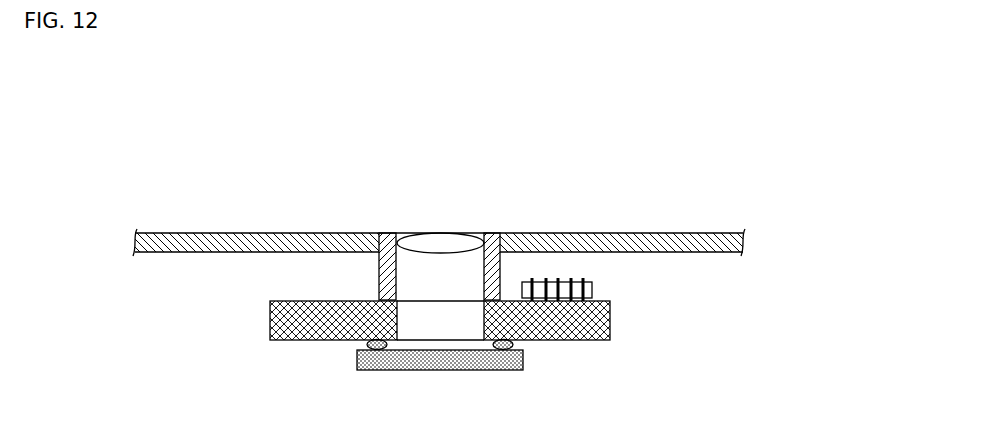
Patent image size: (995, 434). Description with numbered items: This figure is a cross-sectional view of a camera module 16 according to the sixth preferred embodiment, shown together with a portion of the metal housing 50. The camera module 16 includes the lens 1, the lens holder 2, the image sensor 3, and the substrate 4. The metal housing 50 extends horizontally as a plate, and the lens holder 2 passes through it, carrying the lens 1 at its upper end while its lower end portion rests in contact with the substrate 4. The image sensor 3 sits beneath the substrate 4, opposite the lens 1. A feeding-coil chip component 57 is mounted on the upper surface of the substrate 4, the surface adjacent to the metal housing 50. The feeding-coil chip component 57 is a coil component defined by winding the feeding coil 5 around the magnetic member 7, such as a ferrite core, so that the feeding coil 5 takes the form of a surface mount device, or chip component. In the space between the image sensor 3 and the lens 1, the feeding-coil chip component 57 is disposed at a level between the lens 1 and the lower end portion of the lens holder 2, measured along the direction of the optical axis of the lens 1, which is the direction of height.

The lens 1 is at (441, 242).
The lens holder 2 is at (492, 240).
The image sensor 3 is at (440, 372).
The substrate 4 is at (612, 319).
The feeding coil 5 is at (552, 280).
The magnetic member 7 is at (594, 291).
The camera module 16 is at (572, 365).
The metal housing 50 is at (626, 242).
The feeding-coil chip component 57 is at (596, 279).